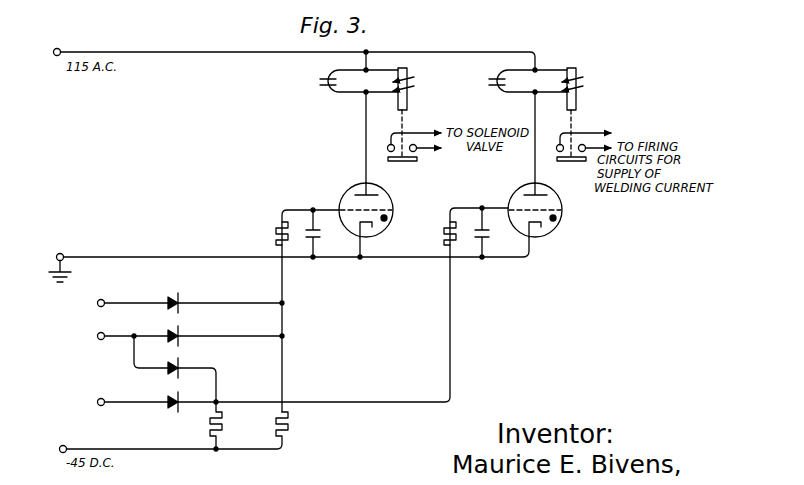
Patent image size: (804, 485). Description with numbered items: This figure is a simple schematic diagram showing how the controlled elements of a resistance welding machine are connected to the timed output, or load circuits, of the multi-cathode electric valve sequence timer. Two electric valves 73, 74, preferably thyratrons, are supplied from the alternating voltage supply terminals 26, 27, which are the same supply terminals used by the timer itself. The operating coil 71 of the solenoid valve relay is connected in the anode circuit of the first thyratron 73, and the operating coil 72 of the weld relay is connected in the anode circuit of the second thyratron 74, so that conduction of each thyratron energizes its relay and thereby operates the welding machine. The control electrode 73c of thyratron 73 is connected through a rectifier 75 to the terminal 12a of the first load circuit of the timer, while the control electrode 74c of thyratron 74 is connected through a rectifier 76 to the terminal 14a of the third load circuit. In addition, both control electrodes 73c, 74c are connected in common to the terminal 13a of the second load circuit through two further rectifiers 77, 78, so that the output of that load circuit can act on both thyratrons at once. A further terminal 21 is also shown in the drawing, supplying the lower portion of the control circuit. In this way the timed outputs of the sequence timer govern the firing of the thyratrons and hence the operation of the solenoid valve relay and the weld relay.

The alternating voltage supply terminal 26 is at (58, 48).
The alternating voltage supply terminal 27 is at (60, 253).
The -45 volt D.C. supply terminal 21 is at (63, 446).
The terminal of load circuit 12a is at (101, 300).
The terminal of load circuit 13a is at (101, 332).
The terminal of load circuit 14a is at (101, 398).
The operating coil of the solenoid valve relay 71 is at (406, 74).
The operating coil of the weld relay 72 is at (577, 73).
The electric valve 73 is at (348, 190).
The control electrode 73c is at (390, 206).
The electric valve 74 is at (517, 190).
The control electrode 74c is at (560, 204).
The rectifier 75 is at (177, 294).
The rectifier 76 is at (177, 410).
The rectifier 77 is at (181, 332).
The rectifier 78 is at (181, 364).